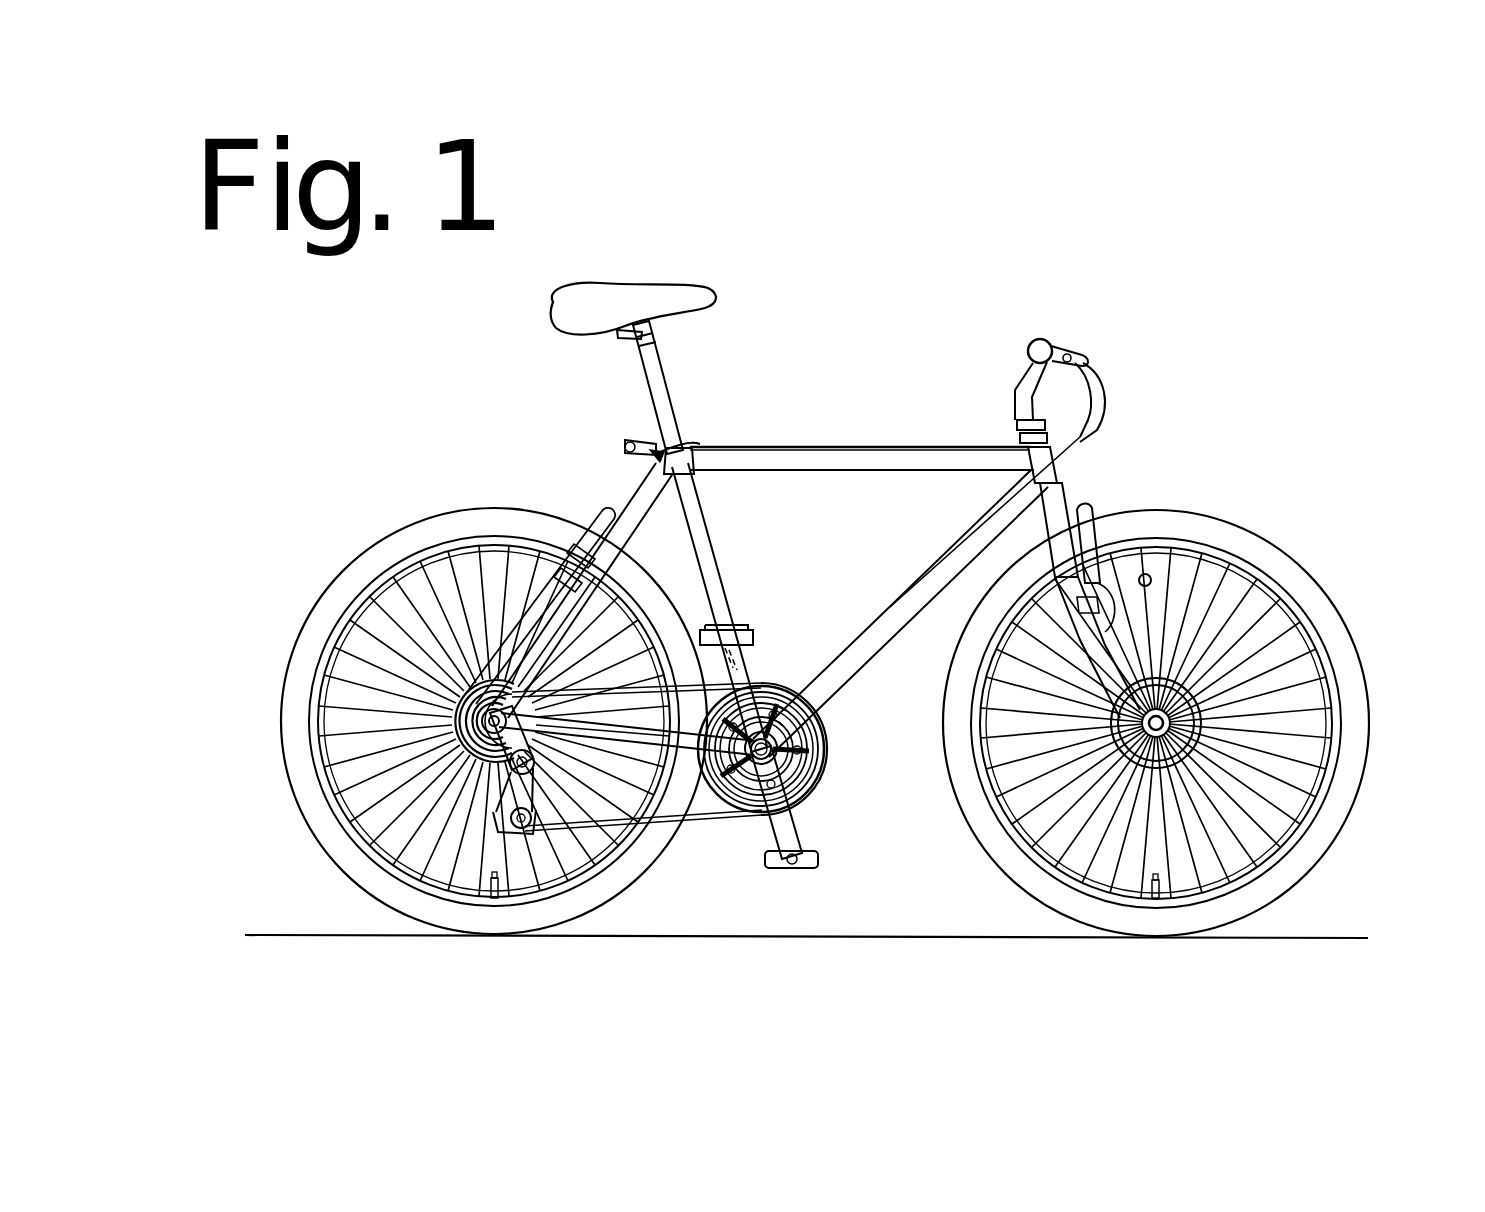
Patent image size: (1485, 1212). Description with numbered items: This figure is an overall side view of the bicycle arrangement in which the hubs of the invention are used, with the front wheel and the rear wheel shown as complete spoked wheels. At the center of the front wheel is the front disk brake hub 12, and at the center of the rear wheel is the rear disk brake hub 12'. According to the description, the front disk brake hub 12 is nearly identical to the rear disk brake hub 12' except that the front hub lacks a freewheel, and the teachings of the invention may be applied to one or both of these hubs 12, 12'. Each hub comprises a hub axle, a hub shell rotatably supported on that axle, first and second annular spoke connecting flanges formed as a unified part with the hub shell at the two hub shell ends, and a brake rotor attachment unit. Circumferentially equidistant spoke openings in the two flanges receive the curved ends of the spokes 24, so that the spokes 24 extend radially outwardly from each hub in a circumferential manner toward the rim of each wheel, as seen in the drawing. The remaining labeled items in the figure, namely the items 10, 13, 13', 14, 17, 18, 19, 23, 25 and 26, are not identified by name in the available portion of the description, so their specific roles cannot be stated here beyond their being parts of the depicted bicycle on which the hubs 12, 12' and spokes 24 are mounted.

The bicycle 10 is at (1084, 301).
The front disk brake hub 12 is at (953, 606).
The rear disk brake hub 12' is at (810, 658).
The front tire 13 is at (1156, 685).
The rear tire 13' is at (493, 697).
The frame 14 is at (725, 568).
The saddle 17 is at (688, 313).
The handlebar 18 is at (1035, 342).
The chain 19 is at (705, 830).
The hub 23 is at (1170, 734).
The spokes 24 is at (440, 603).
The rim 25 is at (455, 573).
The tire 26 is at (538, 512).